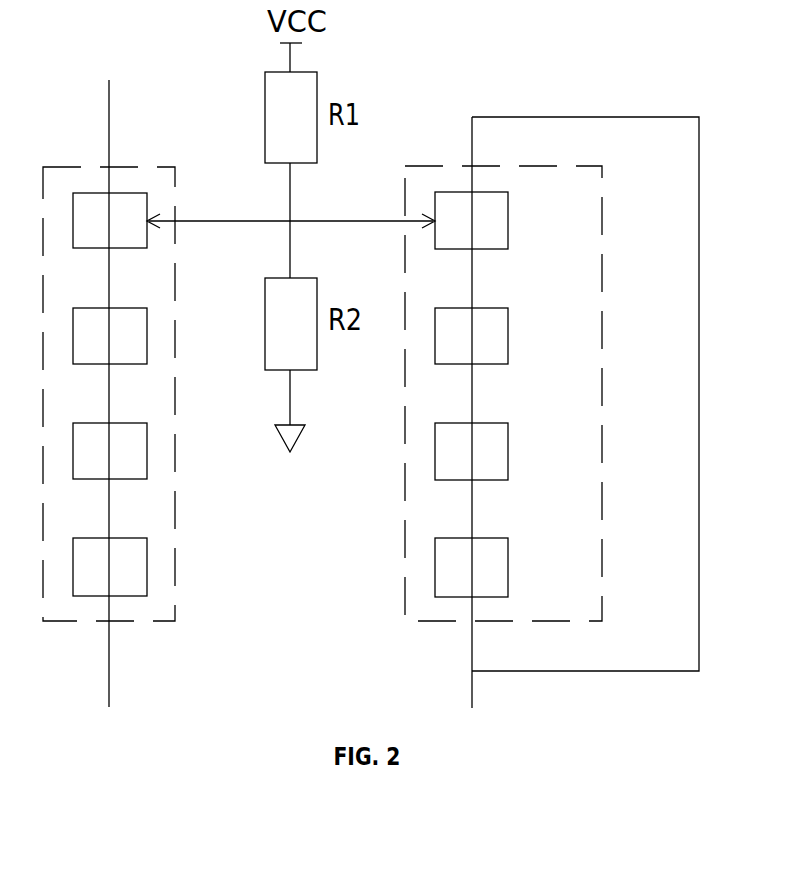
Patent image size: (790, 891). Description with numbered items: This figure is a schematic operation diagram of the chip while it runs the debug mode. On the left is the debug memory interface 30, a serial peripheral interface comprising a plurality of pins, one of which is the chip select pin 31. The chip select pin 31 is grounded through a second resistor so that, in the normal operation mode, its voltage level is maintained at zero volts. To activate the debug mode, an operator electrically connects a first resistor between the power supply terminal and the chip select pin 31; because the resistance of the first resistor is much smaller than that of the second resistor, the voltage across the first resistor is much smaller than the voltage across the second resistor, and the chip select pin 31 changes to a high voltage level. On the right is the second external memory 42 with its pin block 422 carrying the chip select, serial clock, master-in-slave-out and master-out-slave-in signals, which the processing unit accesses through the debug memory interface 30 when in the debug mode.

The debug memory interface 30 is at (109, 388).
The chip select pin 31 is at (96, 235).
The second external memory 42 is at (643, 117).
The SPI interface module 422 is at (405, 567).